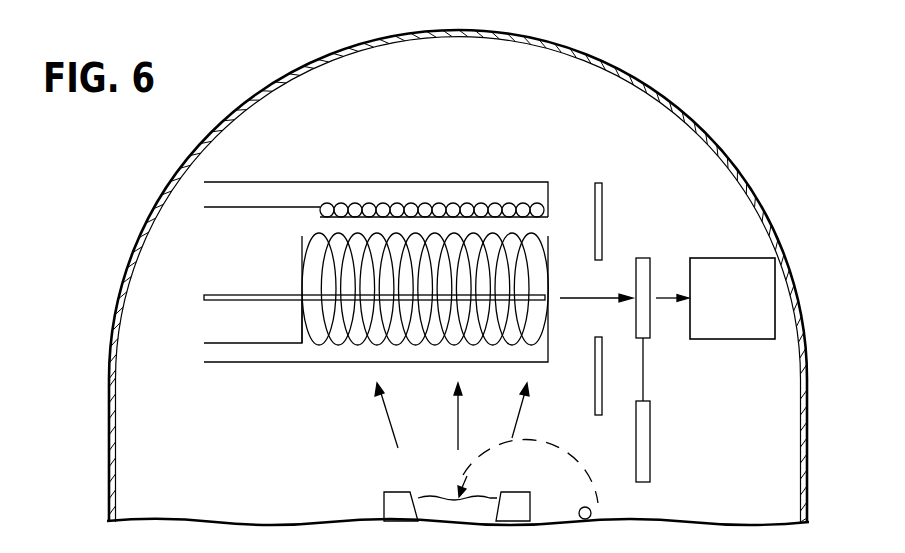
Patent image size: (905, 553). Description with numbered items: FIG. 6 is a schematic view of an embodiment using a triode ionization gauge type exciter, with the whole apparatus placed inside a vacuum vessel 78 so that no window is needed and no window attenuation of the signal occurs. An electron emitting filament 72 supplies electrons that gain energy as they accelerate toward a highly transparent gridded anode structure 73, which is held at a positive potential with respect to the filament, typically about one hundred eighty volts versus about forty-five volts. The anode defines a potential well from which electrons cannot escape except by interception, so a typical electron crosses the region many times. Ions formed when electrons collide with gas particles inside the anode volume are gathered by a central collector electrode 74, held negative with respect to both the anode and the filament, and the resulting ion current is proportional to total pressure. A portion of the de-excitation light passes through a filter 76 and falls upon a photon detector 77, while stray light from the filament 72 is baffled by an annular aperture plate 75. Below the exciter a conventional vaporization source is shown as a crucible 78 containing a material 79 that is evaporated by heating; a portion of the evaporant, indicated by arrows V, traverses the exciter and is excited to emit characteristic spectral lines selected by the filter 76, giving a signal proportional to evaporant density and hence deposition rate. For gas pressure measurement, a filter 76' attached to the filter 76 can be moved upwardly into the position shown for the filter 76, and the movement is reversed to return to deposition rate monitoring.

The electron emitting filament 72 is at (385, 210).
The gridded anode structure 73 is at (301, 258).
The central collector electrode 74 is at (215, 301).
The annular aperture plate 75 is at (600, 186).
The filter 76 is at (652, 304).
The filter 76' is at (676, 441).
The photon detector 77 is at (713, 257).
The vacuum vessel 78 is at (147, 224).
The material 79 is at (452, 496).
The arrows V is at (380, 407).